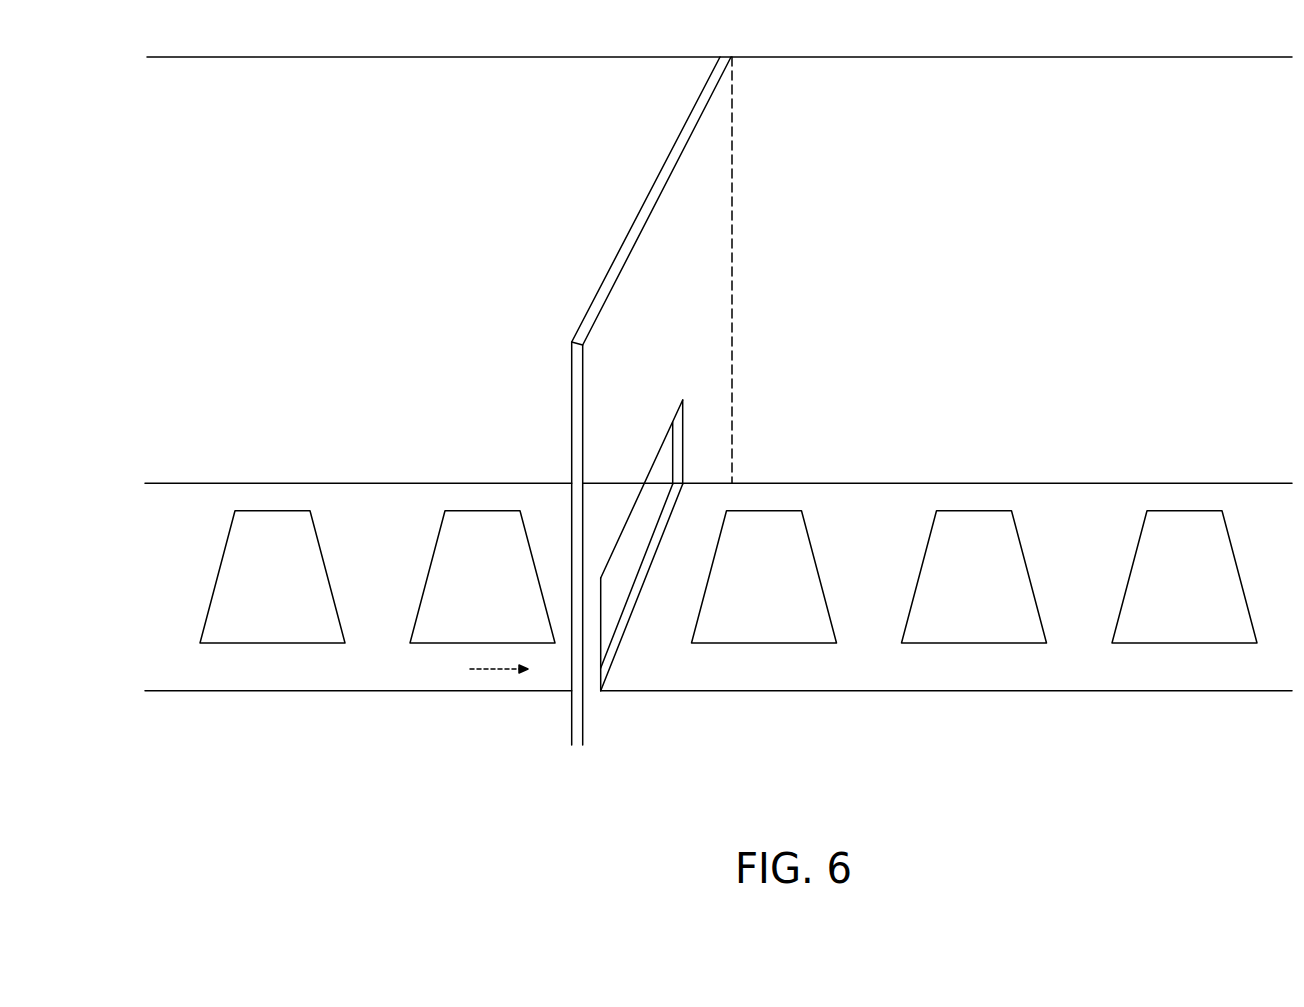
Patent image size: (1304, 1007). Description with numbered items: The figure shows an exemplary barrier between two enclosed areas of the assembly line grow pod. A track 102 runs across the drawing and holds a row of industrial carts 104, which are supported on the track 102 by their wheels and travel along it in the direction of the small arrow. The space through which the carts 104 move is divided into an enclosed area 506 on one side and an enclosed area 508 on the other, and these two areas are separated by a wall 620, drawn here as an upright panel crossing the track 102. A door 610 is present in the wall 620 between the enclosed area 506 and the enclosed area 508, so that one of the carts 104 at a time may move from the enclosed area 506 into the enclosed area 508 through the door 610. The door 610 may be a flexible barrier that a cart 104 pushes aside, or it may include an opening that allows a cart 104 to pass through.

The track 102 is at (1023, 691).
The industrial cart 104 is at (276, 510).
The enclosed area 506 is at (403, 130).
The enclosed area 508 is at (1113, 60).
The door 610 is at (662, 475).
The wall 620 is at (774, 270).